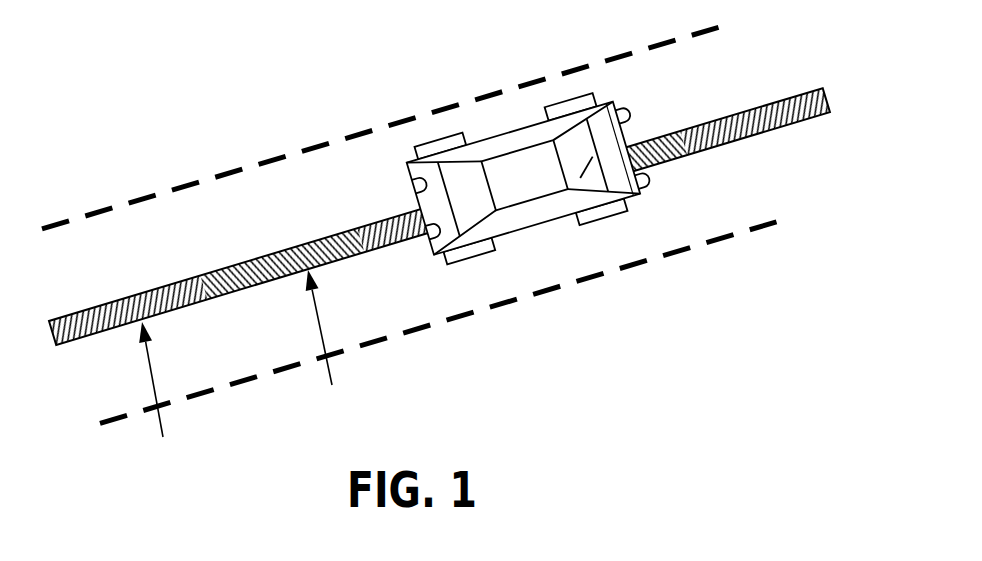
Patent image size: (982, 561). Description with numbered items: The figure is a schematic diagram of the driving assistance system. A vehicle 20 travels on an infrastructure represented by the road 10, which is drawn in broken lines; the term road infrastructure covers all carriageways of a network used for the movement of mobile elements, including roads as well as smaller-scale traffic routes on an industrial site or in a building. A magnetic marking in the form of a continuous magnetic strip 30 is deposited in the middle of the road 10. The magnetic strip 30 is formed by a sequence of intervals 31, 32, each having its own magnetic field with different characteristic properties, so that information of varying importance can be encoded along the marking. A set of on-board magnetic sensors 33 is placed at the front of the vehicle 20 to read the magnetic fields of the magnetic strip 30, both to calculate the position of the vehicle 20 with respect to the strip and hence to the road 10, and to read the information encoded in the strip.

The road 10 is at (674, 254).
The vehicle 20 is at (538, 223).
The magnetic strip 30 is at (752, 90).
The interval 31 is at (329, 347).
The interval 32 is at (161, 398).
The on-board magnetic sensors 33 is at (615, 78).